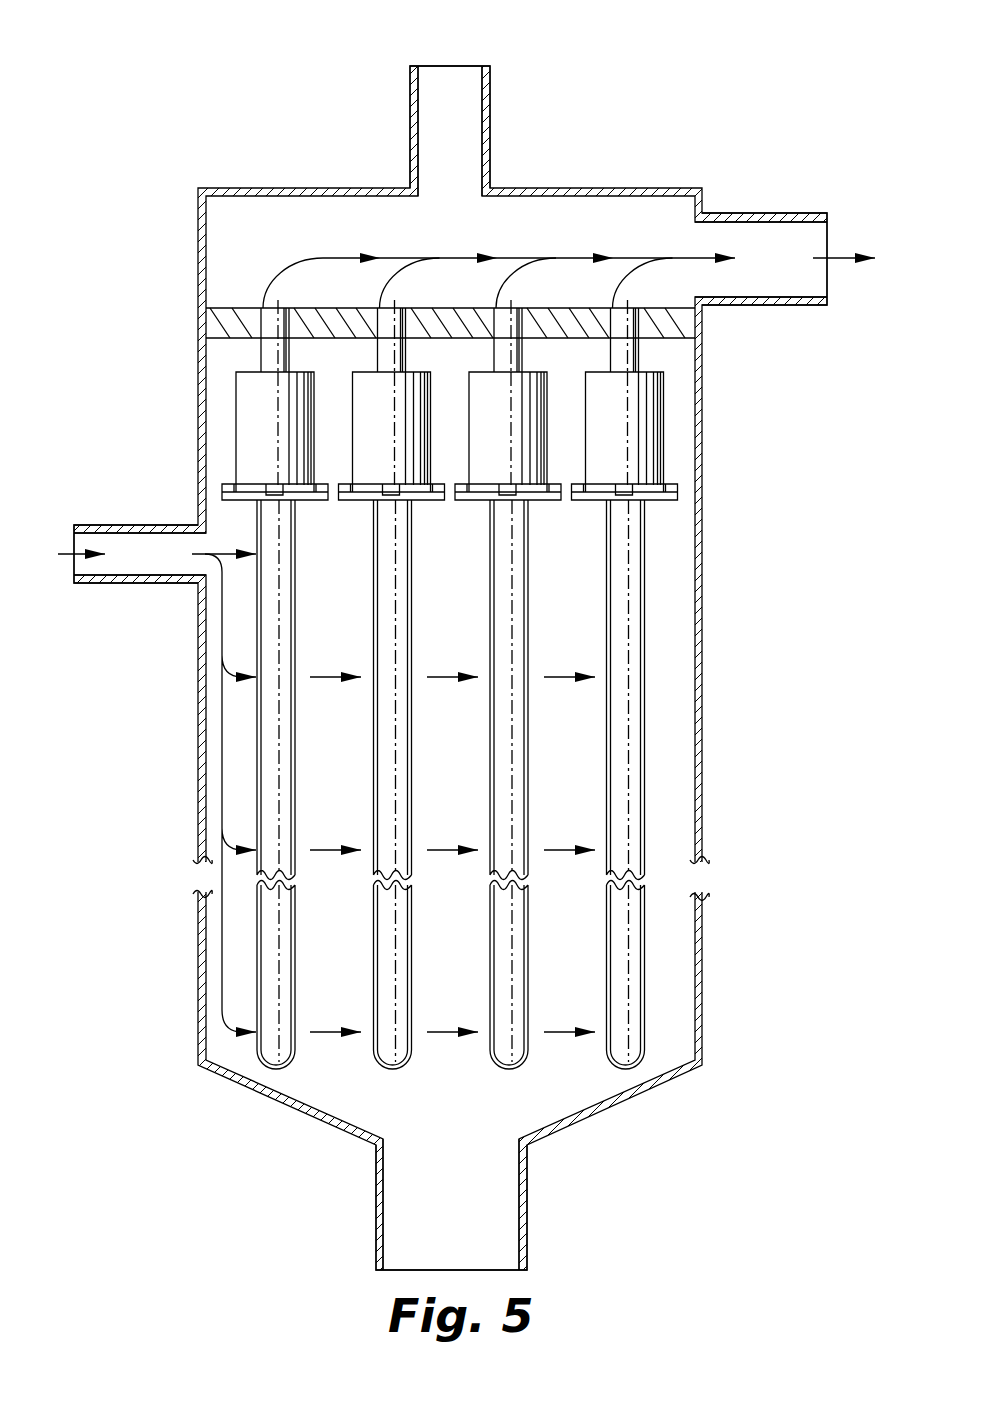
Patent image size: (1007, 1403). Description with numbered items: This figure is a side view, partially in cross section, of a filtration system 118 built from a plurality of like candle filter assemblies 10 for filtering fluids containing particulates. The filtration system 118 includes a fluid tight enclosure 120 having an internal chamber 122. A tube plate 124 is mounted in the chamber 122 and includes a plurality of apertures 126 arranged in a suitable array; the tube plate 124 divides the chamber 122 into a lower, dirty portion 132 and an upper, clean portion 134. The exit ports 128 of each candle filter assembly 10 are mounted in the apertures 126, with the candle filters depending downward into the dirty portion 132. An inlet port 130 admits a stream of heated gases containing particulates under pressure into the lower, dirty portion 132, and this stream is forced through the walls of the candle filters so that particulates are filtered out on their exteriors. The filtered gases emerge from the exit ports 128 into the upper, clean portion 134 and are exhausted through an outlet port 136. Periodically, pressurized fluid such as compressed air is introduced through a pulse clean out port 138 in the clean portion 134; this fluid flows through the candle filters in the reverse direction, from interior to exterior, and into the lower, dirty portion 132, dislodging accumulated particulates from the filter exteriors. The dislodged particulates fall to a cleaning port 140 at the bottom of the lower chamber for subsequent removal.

The candle filter assembly 10 is at (488, 1075).
The filtration system 118 is at (572, 86).
The fluid tight enclosure 120 is at (704, 468).
The internal chamber 122 is at (470, 621).
The tube plate 124 is at (683, 323).
The apertures 126 is at (266, 306).
The exit ports 128 is at (373, 362).
The inlet port 130 is at (146, 540).
The lower dirty portion 132 is at (355, 621).
The upper clean portion 134 is at (566, 234).
The outlet port 136 is at (766, 232).
The pulse clean out port 138 is at (456, 78).
The cleaning port 140 is at (403, 1231).